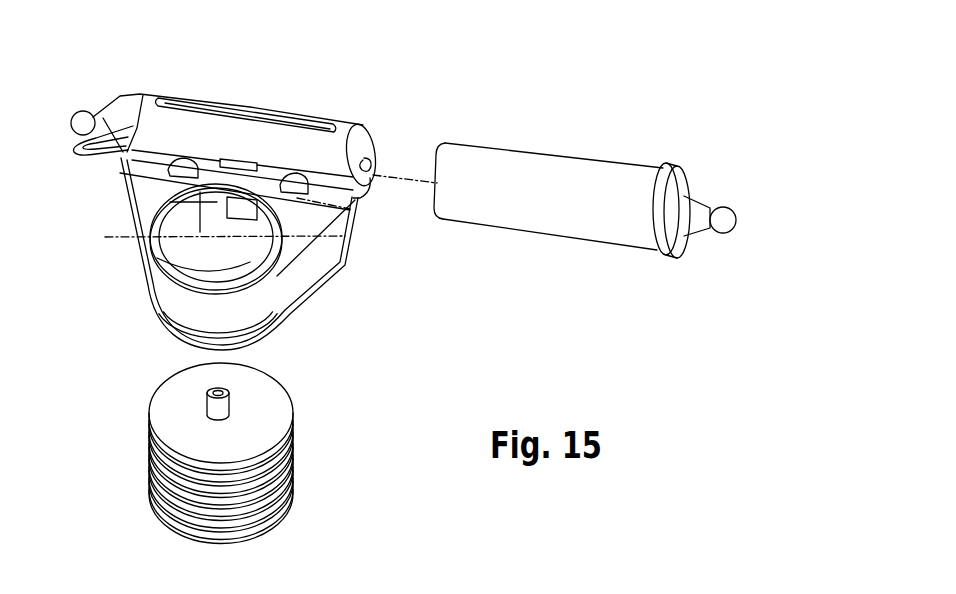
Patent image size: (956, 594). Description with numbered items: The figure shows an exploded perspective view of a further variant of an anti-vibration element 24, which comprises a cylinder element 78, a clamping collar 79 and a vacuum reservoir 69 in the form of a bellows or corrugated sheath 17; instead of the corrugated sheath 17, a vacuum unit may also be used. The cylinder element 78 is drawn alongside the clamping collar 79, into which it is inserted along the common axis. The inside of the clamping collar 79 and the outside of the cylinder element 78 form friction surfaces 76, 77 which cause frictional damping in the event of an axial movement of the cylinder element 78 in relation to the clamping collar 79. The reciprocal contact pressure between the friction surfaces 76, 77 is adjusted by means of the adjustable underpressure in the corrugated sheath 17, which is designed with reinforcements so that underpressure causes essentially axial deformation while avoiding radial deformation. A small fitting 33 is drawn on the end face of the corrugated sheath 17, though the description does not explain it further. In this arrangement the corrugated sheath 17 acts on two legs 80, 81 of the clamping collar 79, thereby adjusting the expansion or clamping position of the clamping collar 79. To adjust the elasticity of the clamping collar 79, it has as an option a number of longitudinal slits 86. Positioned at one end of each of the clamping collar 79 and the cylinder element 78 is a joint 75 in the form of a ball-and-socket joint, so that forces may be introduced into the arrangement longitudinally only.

The joint 75 is at (83, 111).
The longitudinal slits 86 is at (282, 117).
The clamping collar 79 is at (345, 148).
The friction surface 76 is at (535, 176).
The anti-vibration element 24 is at (633, 140).
The friction surface 77 is at (368, 183).
The cylinder element 78 is at (547, 218).
The leg 80 is at (142, 218).
The leg 81 is at (145, 297).
The pin 33 is at (223, 410).
The corrugated sheath 17 is at (148, 475).
The vacuum reservoir 69 is at (303, 480).